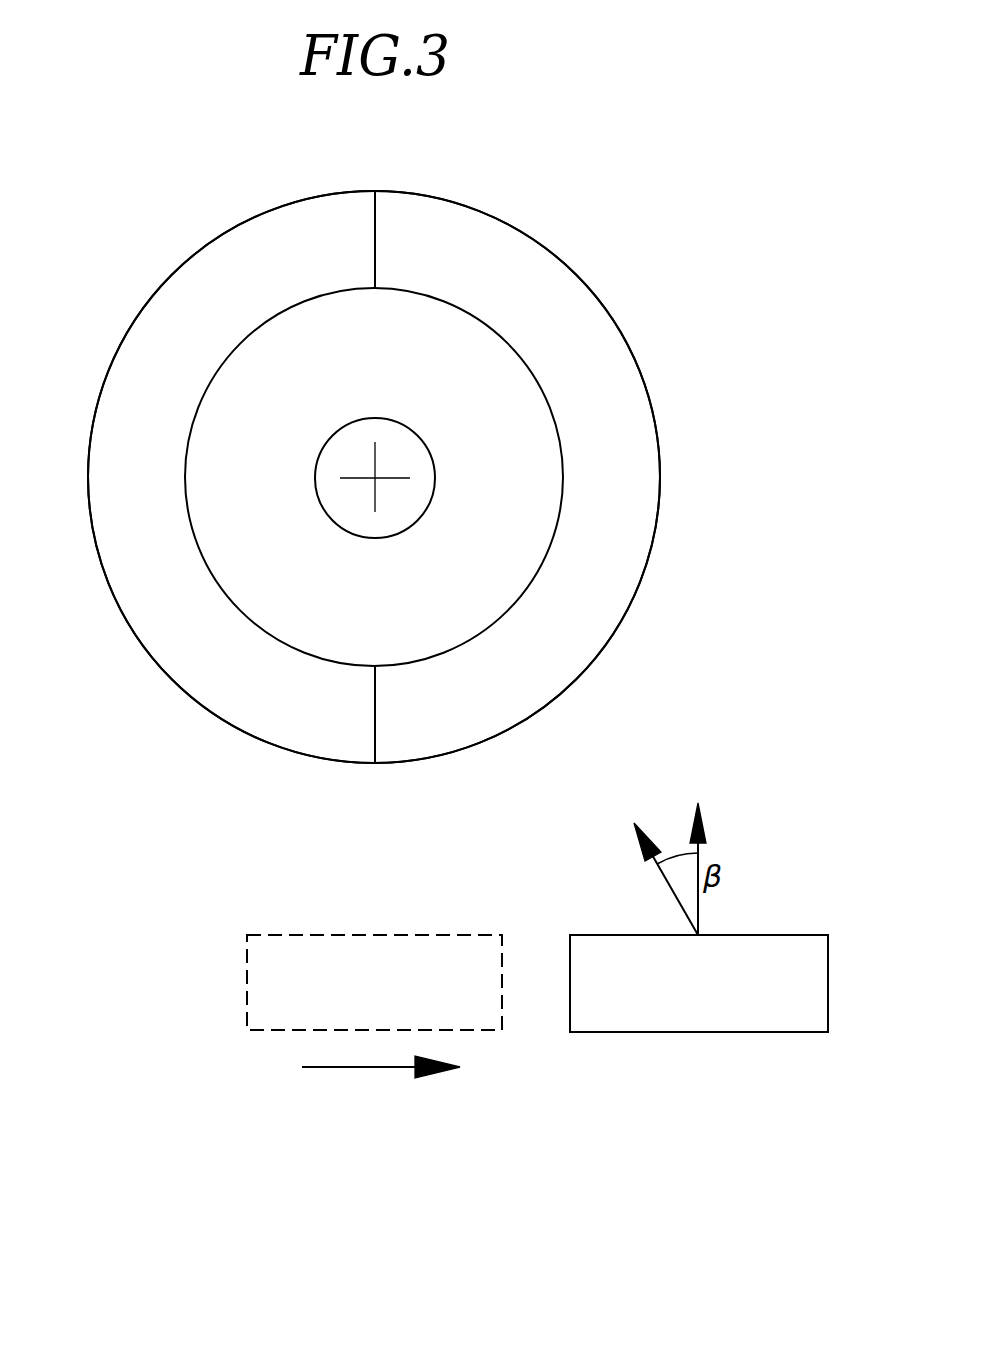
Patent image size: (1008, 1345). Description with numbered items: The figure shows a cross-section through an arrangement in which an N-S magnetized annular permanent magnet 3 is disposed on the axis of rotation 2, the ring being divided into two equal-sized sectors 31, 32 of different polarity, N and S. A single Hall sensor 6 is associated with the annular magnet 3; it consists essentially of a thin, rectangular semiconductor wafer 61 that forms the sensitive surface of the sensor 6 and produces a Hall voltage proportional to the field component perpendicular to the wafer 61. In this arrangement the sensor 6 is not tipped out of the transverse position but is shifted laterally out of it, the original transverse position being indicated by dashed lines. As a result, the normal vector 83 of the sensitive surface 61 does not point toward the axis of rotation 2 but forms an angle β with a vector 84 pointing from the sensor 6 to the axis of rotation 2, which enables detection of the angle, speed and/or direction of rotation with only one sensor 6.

The axis of rotation 2 is at (390, 503).
The annular permanent magnet 3 is at (424, 477).
The sector 31 is at (558, 318).
The sector 32 is at (165, 337).
The Hall sensor 6 is at (736, 986).
The semiconductor wafer 61 is at (758, 922).
The normal vector 83 is at (724, 861).
The vector 84 is at (640, 879).